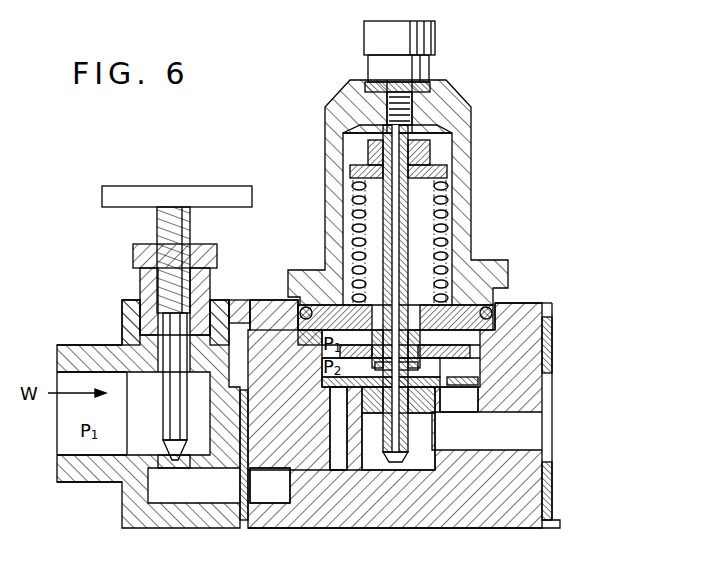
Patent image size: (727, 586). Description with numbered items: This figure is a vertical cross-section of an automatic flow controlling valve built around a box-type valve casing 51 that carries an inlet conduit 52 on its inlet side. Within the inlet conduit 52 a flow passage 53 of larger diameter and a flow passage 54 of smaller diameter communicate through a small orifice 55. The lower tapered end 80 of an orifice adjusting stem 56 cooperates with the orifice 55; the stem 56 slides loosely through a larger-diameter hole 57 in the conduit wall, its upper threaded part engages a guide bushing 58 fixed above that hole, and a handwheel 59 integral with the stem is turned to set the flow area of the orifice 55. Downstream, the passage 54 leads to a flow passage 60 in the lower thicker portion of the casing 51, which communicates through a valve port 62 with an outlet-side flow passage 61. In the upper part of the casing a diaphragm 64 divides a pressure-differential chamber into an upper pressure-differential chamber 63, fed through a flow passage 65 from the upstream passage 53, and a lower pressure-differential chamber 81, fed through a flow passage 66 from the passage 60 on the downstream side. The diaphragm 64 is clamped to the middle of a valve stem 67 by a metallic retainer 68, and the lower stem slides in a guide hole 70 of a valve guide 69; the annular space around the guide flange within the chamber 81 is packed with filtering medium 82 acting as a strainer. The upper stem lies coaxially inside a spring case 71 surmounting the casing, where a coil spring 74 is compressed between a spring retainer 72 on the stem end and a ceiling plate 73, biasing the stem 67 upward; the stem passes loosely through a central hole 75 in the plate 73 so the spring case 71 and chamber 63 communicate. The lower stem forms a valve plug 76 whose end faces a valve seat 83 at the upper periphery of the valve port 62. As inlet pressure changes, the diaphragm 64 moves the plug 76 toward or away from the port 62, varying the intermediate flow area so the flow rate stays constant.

The valve casing 51 is at (545, 305).
The inlet conduit 52 is at (87, 480).
The flow passage of larger diameter 53 is at (75, 350).
The flow passage of smaller diameter 54 is at (165, 503).
The orifice 55 is at (165, 462).
The orifice adjusting stem 56 is at (207, 333).
The larger-diameter hole 57 is at (124, 333).
The guide bushing 58 is at (207, 250).
The handwheel 59 is at (184, 193).
The flow passage 60 is at (367, 503).
The outlet-side flow passage 61 is at (535, 434).
The valve port 62 is at (393, 468).
The upper pressure-differential chamber 63 is at (500, 322).
The diaphragm 64 is at (546, 347).
The flow passage 65 is at (266, 330).
The flow passage 66 is at (300, 503).
The valve stem 67 is at (403, 233).
The metallic retainer 68 is at (445, 330).
The valve guide 69 is at (434, 406).
The guide hole 70 is at (355, 450).
The spring case 71 is at (463, 150).
The spring retainer 72 is at (432, 150).
The ceiling plate 73 is at (323, 305).
The coil spring 74 is at (448, 196).
The central hole 75 is at (357, 300).
The valve plug 76 is at (394, 452).
The lower tapered end 80 is at (173, 463).
The lower pressure-differential chamber 81 is at (546, 366).
The filtering medium 82 is at (545, 392).
The valve seat 83 is at (376, 458).